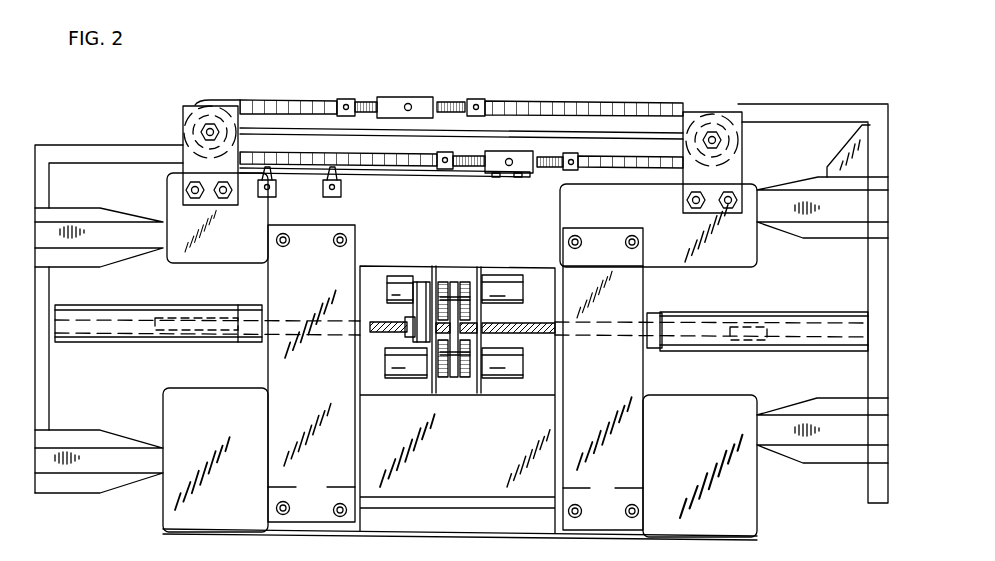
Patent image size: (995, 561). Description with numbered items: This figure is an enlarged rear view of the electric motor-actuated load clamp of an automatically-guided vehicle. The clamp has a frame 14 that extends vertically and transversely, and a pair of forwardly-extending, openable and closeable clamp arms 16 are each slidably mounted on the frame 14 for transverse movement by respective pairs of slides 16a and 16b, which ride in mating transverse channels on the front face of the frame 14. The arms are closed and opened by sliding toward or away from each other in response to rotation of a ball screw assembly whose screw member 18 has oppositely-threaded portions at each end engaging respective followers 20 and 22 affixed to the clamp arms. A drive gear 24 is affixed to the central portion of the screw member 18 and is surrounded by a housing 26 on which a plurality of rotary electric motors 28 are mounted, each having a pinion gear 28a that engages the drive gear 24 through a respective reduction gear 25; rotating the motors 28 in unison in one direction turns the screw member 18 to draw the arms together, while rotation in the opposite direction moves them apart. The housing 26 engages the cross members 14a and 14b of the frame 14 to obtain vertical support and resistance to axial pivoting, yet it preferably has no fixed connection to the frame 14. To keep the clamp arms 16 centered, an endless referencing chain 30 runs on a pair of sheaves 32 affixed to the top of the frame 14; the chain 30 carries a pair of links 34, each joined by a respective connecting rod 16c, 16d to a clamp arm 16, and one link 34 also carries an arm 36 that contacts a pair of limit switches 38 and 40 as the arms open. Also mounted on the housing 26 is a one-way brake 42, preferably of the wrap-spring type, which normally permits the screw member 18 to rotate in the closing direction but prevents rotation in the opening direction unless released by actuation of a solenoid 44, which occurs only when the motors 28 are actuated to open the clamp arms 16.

The frame 14 is at (262, 268).
The cross member 14a is at (672, 272).
The cross member 14b is at (673, 393).
The clamp arm 16 is at (888, 282).
The slide 16a is at (790, 186).
The slide 16b is at (100, 207).
The connecting rod 16c is at (817, 104).
The connecting rod 16d is at (100, 145).
The screw member 18 is at (553, 322).
The follower 20 is at (797, 312).
The follower 22 is at (118, 305).
The drive gear 24 is at (447, 372).
The reduction gear 25 is at (470, 313).
The housing 26 is at (445, 267).
The rotary electric motor 28 is at (392, 277).
The pinion gear 28a is at (473, 277).
The endless referencing chain 30 is at (557, 103).
The sheave 32 is at (211, 110).
The link 34 is at (402, 98).
The arm 36 is at (380, 172).
The limit switch 38 is at (328, 198).
The limit switch 40 is at (265, 197).
The one-way brake 42 is at (405, 318).
The solenoid 44 is at (417, 282).